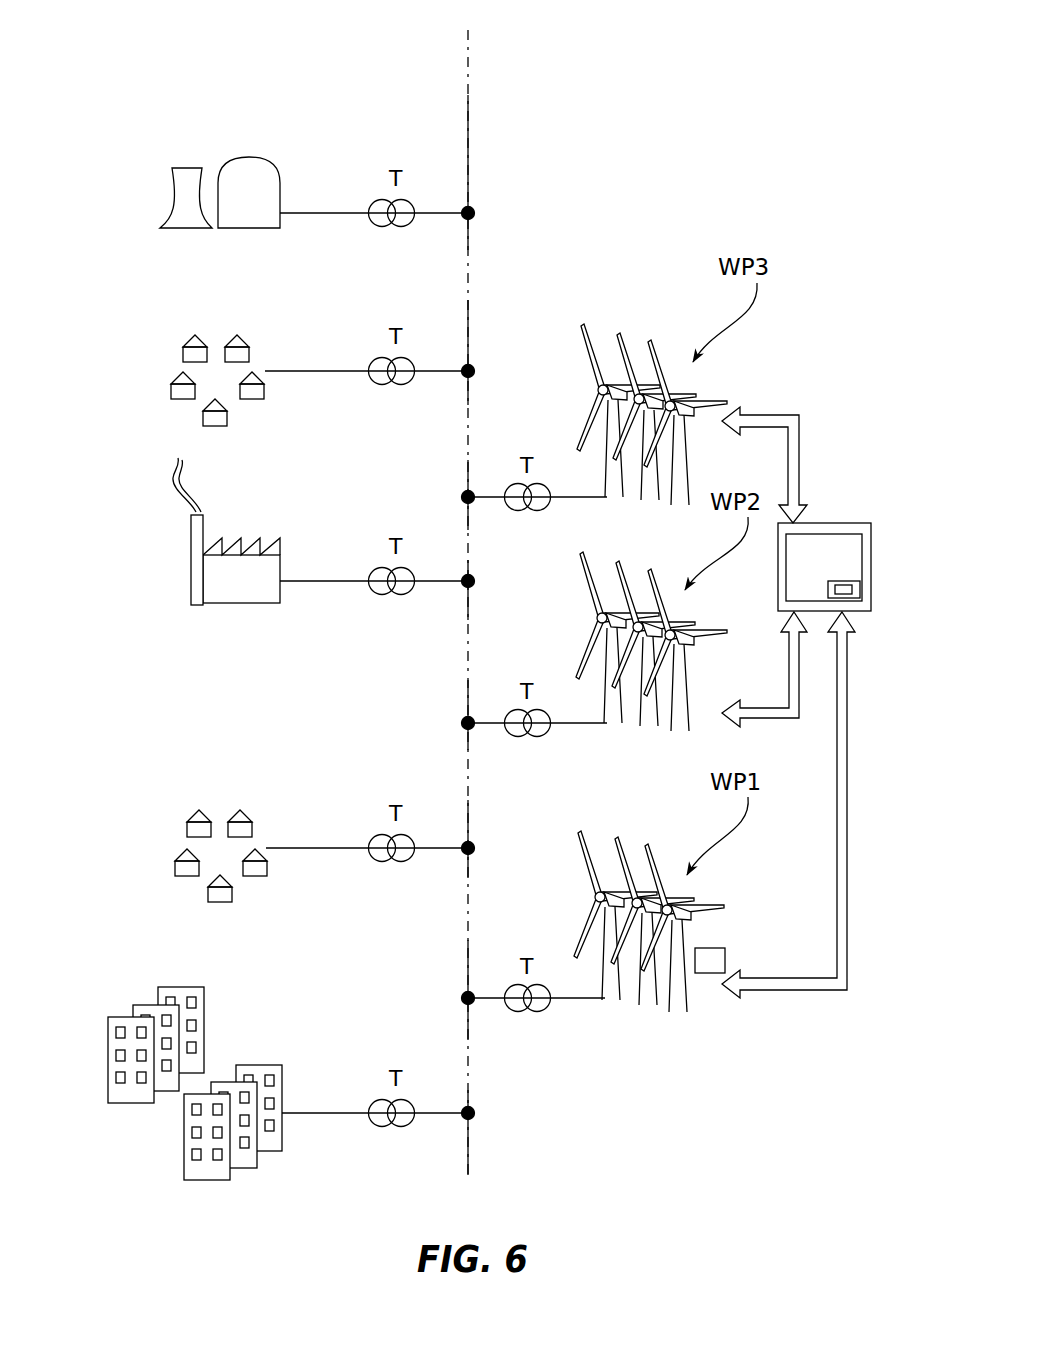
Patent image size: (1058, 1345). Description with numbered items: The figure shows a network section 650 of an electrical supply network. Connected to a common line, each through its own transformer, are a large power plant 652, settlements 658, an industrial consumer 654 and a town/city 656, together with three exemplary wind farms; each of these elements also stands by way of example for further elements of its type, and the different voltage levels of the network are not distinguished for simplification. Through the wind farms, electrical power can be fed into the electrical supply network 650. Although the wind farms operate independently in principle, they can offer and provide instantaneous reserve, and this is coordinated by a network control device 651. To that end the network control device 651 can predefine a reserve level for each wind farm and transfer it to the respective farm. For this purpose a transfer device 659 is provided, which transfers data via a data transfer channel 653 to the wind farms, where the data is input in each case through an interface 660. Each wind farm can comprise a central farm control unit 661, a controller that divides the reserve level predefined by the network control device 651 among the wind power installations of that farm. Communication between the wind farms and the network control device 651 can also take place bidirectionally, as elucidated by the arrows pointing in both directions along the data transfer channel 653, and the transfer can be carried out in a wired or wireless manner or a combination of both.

The network section 650 is at (693, 143).
The network control device 651 is at (867, 497).
The large power plant 652 is at (233, 145).
The data transfer channel 653 is at (780, 413).
The industrial consumer 654 is at (175, 505).
The town/city 656 is at (155, 970).
The settlements 658 is at (173, 330).
The transfer device 659 is at (860, 583).
The interface 660 is at (855, 590).
The central farm control unit 661 is at (722, 958).